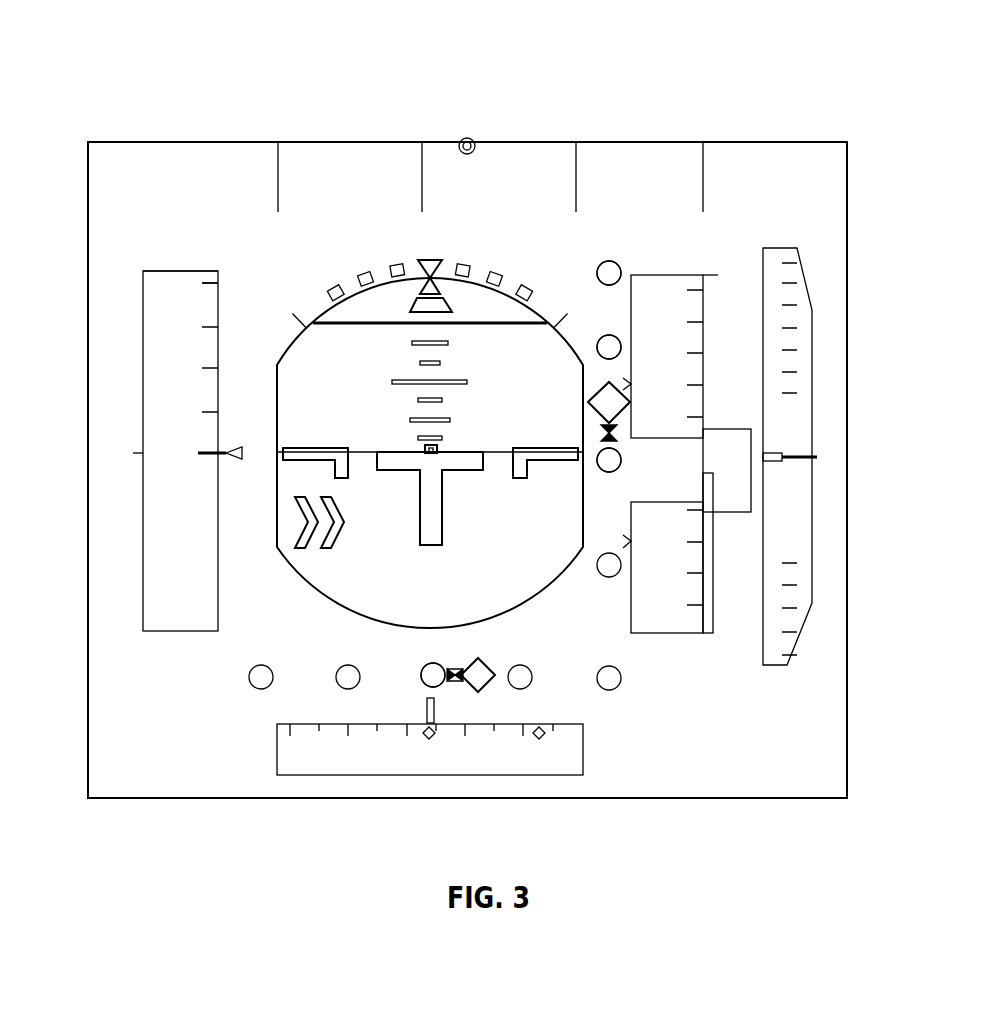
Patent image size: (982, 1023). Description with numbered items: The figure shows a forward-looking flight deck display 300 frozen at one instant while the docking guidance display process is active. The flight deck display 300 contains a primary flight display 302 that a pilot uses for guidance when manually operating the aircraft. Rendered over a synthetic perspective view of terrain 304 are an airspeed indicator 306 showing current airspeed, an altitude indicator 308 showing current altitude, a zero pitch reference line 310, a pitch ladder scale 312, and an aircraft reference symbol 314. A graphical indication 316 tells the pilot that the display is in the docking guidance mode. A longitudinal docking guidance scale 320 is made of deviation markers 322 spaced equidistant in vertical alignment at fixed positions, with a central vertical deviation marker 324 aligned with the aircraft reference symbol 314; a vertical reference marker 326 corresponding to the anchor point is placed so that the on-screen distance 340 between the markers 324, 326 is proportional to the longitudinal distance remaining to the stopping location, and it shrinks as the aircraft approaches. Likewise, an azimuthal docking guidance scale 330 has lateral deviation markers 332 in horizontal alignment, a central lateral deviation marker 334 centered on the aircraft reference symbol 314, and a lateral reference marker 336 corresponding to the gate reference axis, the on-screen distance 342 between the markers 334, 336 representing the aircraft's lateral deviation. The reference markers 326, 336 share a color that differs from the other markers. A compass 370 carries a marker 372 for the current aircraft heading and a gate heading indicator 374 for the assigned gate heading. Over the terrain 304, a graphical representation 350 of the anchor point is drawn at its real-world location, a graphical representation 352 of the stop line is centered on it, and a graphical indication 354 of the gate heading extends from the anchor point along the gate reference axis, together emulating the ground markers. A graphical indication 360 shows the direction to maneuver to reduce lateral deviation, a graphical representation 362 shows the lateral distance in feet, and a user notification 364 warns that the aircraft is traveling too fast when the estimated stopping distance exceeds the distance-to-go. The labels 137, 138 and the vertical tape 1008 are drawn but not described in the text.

The flight deck display 300 is at (145, 70).
The primary flight display 302 is at (591, 164).
The terrain 304 is at (522, 547).
The airspeed indicator 306 is at (165, 362).
The altitude indicator 308 is at (638, 321).
The zero pitch reference line 310 is at (368, 448).
The pitch ladder scale 312 is at (428, 372).
The aircraft reference symbol 314 is at (292, 446).
The graphical indication 316 is at (583, 612).
The longitudinal docking guidance scale 320 is at (608, 243).
The deviation markers 322 is at (600, 270).
The central vertical deviation marker 324 is at (597, 462).
The vertical reference marker 326 is at (605, 403).
The azimuthal docking guidance scale 330 is at (661, 662).
The deviation markers 332 is at (630, 732).
The central lateral deviation marker 334 is at (427, 688).
The lateral reference marker 336 is at (470, 694).
The on-screen distance 340 is at (616, 433).
The on-screen distance 342 is at (429, 748).
The graphical representation of the anchor point 350 is at (439, 450).
The graphical representation of the stop line 352 is at (374, 458).
The graphical indication of the gate heading 354 is at (419, 538).
The graphical indication of maneuver direction 360 is at (298, 537).
The graphical representation of the lateral distance 362 is at (393, 597).
The user notification 364 is at (383, 637).
The compass 370 is at (589, 757).
The marker 372 is at (455, 690).
The gate heading indicator 374 is at (539, 748).
The airspeed tape tick 137 is at (236, 294).
The airspeed tape top 138 is at (191, 257).
The vertical speed tape 1008 is at (772, 475).